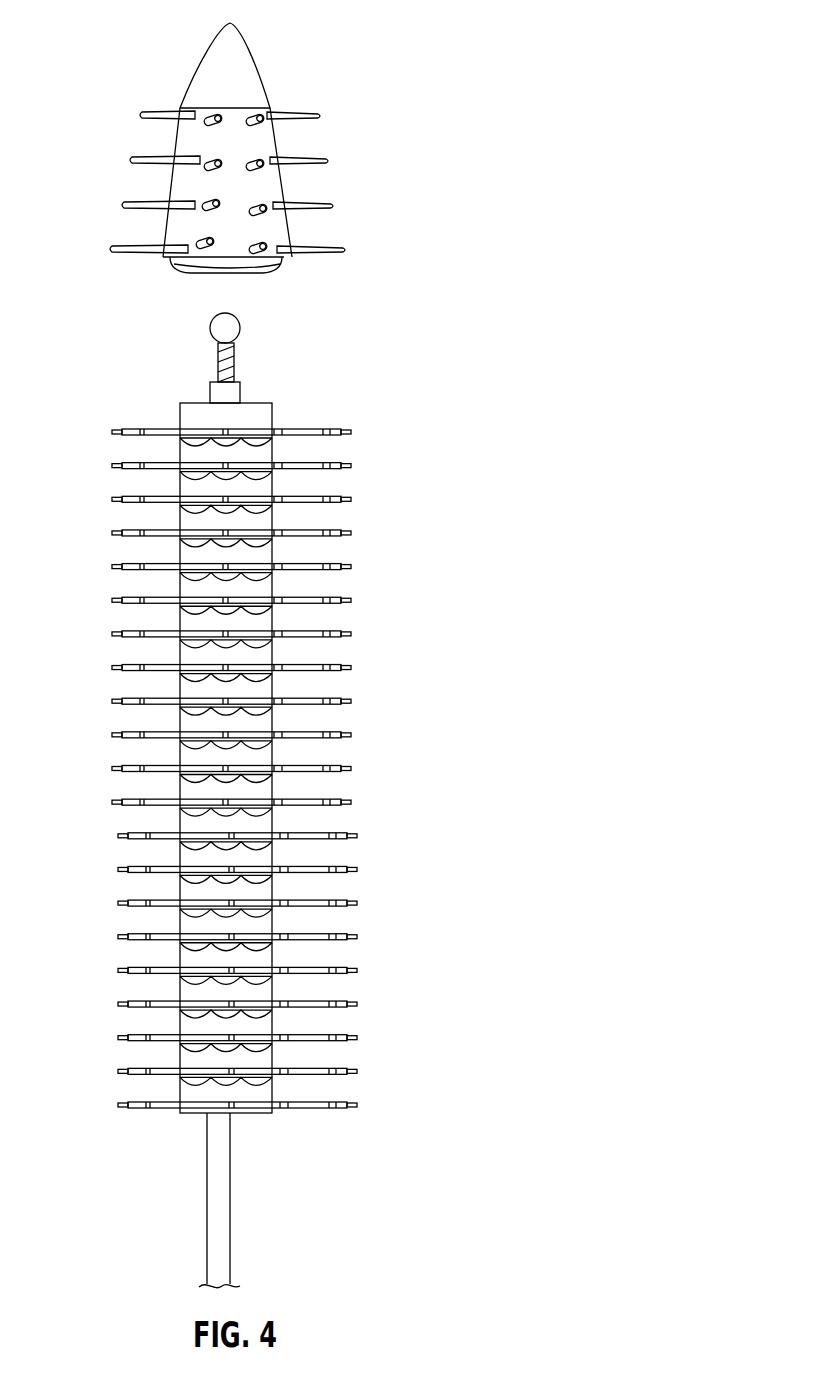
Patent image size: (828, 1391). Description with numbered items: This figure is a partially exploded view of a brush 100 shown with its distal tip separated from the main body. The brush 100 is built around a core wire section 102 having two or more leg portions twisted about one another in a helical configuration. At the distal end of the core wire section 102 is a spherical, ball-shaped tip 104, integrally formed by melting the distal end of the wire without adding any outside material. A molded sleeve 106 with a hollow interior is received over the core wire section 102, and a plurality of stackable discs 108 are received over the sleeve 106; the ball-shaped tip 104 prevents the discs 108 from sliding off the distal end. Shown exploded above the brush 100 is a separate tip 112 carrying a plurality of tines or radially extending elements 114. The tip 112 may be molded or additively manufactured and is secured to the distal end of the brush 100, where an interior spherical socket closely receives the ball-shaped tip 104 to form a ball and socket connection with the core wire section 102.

The brush 100 is at (418, 284).
The core wire section 102 is at (237, 366).
The ball-shaped tip 104 is at (210, 332).
The molded sleeve 106 is at (222, 1180).
The stackable discs 108 is at (262, 412).
The tip 112 is at (300, 52).
The radially extending elements 114 is at (323, 203).